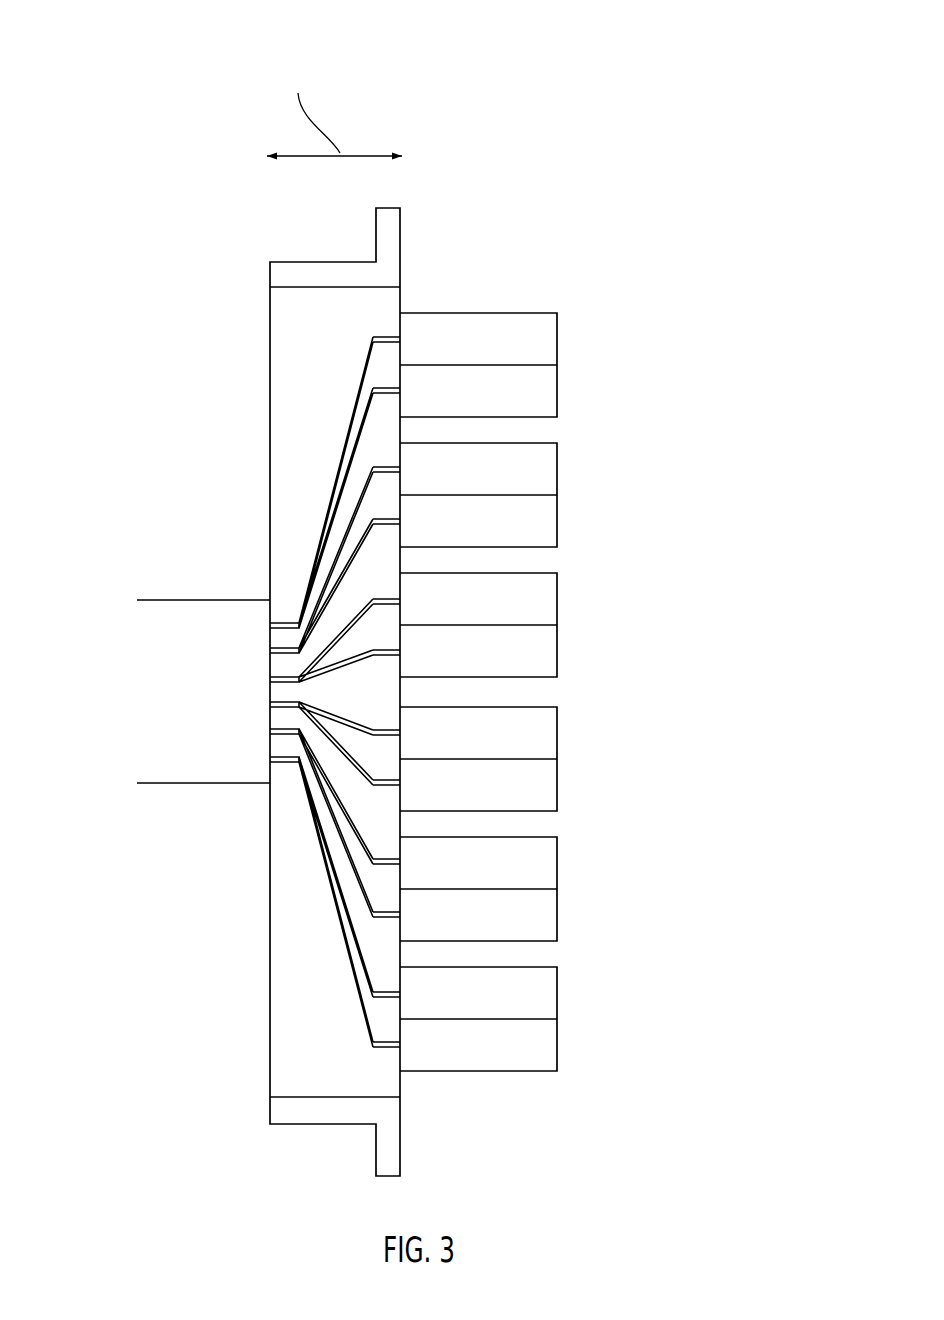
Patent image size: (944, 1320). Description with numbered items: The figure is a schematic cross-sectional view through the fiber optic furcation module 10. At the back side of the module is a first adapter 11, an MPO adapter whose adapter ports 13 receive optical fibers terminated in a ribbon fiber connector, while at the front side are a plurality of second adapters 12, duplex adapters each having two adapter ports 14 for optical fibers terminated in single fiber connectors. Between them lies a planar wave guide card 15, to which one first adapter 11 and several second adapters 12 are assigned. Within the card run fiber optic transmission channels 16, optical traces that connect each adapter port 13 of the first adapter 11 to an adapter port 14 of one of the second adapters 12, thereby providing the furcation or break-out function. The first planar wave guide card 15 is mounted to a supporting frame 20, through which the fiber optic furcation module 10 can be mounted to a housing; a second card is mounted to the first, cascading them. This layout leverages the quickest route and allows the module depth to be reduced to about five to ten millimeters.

The fiber optic furcation module 10 is at (448, 105).
The first adapter 11 is at (170, 712).
The second adapter 12 is at (565, 627).
The adapter port 13 is at (282, 620).
The adapter port 14 is at (393, 467).
The planar wave guide card 15 is at (297, 360).
The fiber optic transmission channel 16 is at (314, 607).
The supporting frame 20 is at (340, 1116).